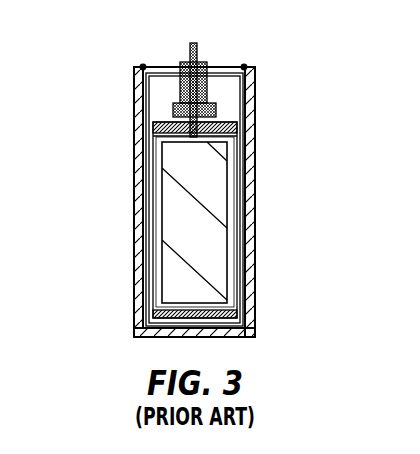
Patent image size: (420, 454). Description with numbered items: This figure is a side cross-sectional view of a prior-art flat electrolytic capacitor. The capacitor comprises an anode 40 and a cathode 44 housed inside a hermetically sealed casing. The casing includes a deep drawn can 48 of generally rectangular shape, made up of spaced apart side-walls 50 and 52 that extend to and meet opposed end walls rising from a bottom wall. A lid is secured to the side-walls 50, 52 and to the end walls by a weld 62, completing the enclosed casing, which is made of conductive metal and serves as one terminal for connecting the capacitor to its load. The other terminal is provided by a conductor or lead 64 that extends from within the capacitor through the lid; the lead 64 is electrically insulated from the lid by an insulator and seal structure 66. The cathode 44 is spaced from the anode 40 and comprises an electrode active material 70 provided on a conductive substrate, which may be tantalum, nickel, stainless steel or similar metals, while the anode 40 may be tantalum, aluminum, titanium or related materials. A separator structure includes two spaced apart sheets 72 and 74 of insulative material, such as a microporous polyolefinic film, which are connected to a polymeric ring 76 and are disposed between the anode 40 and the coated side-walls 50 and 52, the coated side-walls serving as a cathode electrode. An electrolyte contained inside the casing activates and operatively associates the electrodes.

The anode 40 is at (180, 278).
The cathode 44 is at (134, 88).
The deep drawn can 48 is at (137, 123).
The side-wall 50 is at (251, 223).
The side-wall 52 is at (141, 163).
The weld 62 is at (143, 65).
The lead 64 is at (199, 50).
The insulator and seal structure 66 is at (185, 60).
The electrode active material 70 is at (147, 220).
The separator sheet 72 is at (233, 275).
The separator sheet 74 is at (152, 273).
The polymeric ring 76 is at (238, 128).